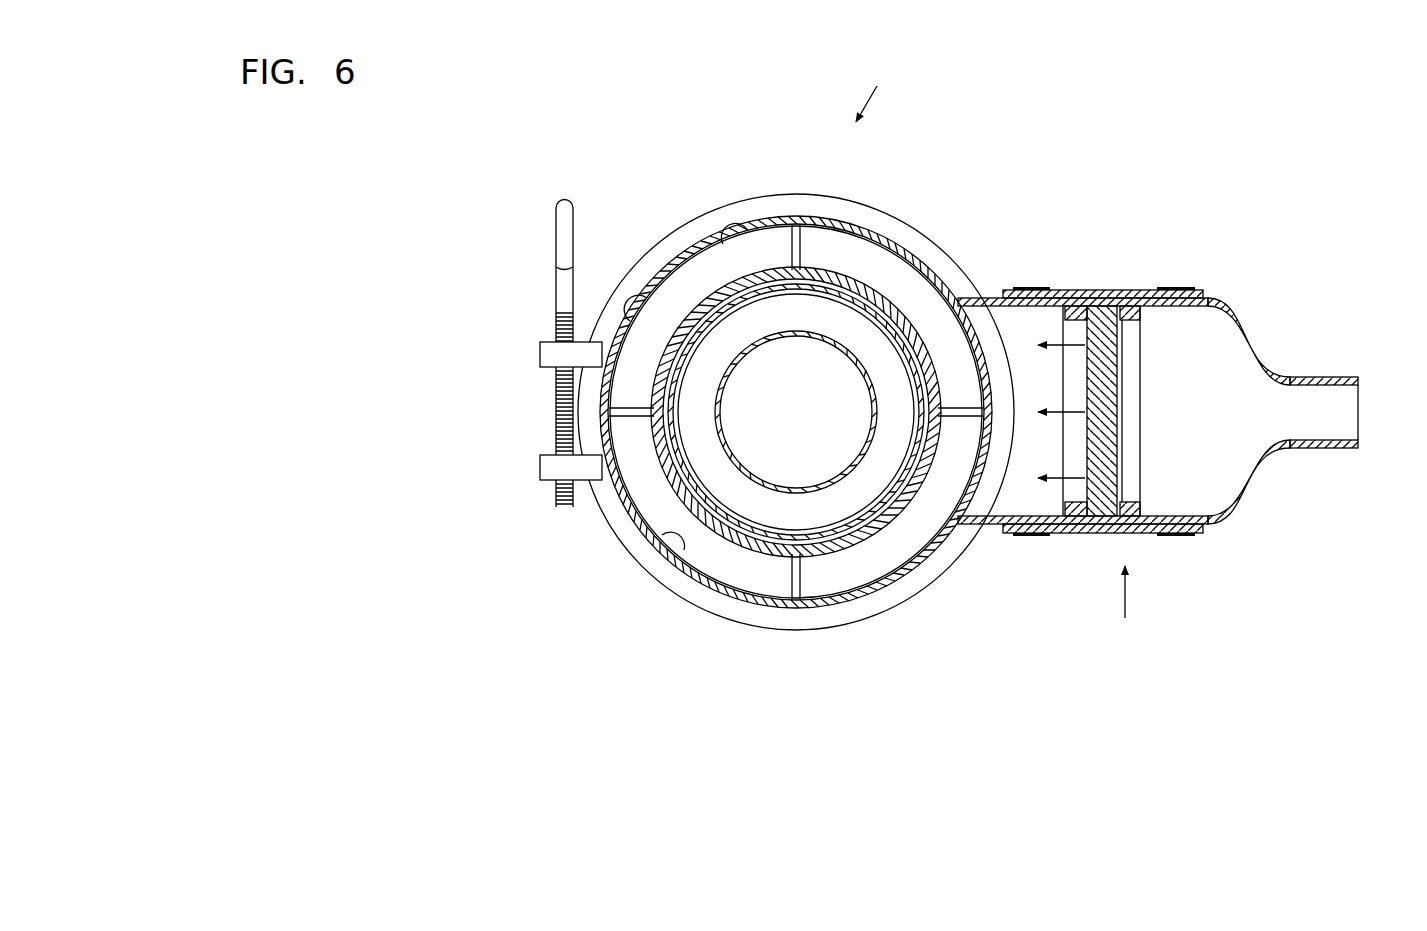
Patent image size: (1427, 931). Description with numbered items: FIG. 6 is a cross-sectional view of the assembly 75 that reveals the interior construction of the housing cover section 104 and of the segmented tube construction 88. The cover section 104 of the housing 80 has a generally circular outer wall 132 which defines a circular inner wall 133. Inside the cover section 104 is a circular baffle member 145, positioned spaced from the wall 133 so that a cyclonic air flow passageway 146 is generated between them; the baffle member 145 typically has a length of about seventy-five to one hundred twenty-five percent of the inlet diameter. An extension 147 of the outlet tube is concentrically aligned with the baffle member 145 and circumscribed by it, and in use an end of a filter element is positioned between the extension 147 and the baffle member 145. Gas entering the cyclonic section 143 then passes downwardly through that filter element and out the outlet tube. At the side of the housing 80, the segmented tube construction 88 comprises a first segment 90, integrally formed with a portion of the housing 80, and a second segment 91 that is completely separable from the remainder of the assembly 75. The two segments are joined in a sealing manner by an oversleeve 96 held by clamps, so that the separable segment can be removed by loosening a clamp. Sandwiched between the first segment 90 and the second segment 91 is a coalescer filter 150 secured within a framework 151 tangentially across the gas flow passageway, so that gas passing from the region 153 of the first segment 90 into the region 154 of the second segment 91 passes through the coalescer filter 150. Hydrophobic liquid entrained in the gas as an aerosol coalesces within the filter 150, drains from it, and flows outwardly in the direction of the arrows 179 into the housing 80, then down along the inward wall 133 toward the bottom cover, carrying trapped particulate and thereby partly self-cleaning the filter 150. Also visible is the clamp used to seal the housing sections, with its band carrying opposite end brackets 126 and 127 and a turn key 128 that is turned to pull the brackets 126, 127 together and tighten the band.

The assembly 75 is at (881, 91).
The housing 80 is at (781, 193).
The segmented tube construction 88 is at (1126, 606).
The first segment 90 is at (984, 295).
The second segment 91 is at (1223, 508).
The oversleeve 96 is at (1066, 292).
The housing cover section 104 is at (687, 577).
The end bracket 126 is at (540, 355).
The end bracket 127 is at (540, 467).
The turn key 128 is at (560, 199).
The circular outer wall 132 is at (625, 515).
The circular inner wall 133 is at (722, 237).
The cyclonic section 143 is at (653, 317).
The circular baffle member 145 is at (882, 297).
The cyclonic air flow passageway 146 is at (867, 260).
The extension 147 is at (763, 485).
The coalescer filter 150 is at (803, 250).
The framework 151 is at (1074, 518).
The region 153 is at (1203, 343).
The region 154 is at (1025, 505).
The arrows 179 is at (1073, 412).